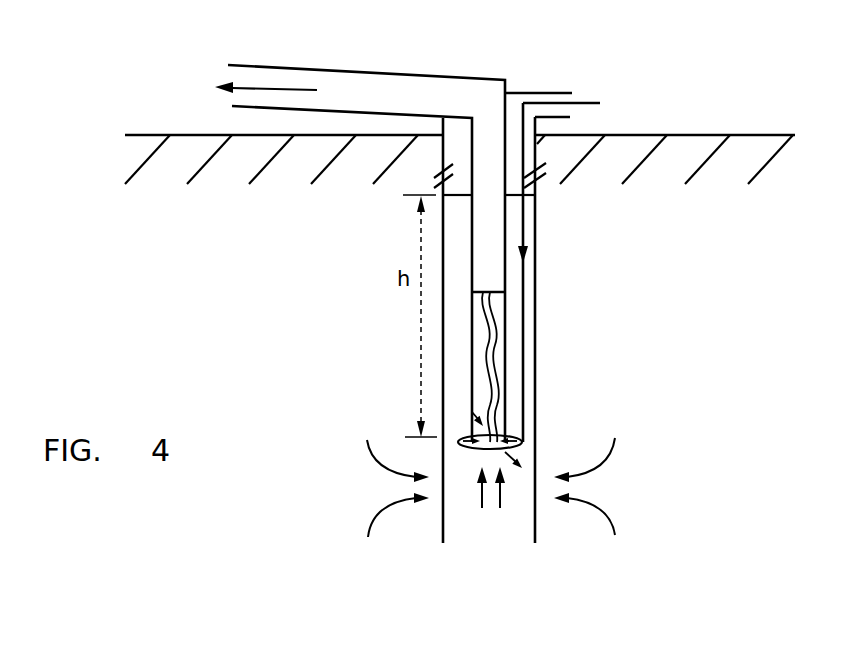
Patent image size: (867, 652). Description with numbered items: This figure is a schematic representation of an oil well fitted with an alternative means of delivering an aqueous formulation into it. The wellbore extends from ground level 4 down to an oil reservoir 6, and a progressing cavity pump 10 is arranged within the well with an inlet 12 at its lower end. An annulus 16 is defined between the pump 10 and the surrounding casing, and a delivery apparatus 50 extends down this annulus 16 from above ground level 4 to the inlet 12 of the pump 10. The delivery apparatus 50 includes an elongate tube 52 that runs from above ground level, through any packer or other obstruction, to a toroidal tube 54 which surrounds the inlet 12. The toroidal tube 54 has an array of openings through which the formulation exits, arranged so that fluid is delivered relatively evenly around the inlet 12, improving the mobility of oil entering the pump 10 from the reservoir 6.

The ground level 4 is at (148, 135).
The elongate tube 52 is at (588, 102).
The annulus 16 is at (513, 150).
The delivery apparatus 50 is at (527, 297).
The progressing cavity pump 10 is at (473, 305).
The inlet 12 is at (478, 450).
The toroidal tube 54 is at (522, 446).
The oil reservoir 6 is at (555, 487).